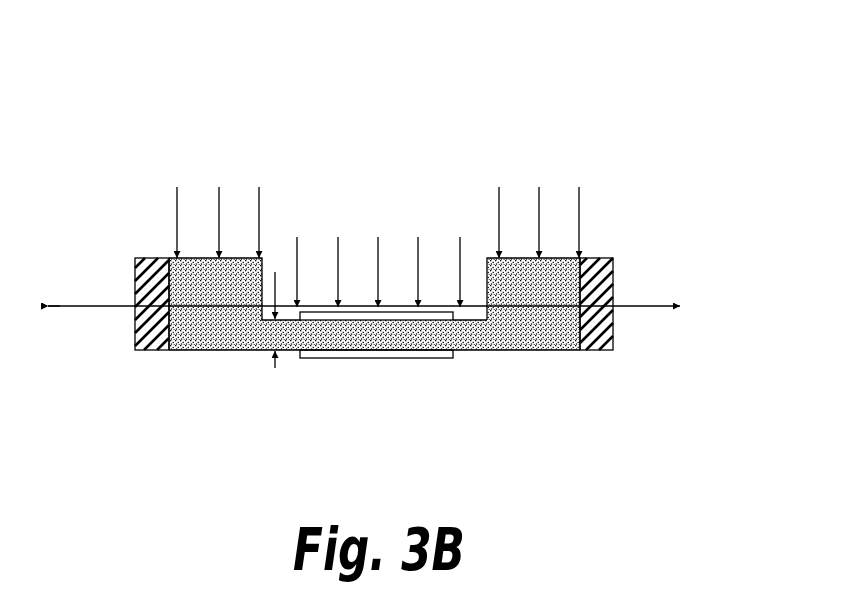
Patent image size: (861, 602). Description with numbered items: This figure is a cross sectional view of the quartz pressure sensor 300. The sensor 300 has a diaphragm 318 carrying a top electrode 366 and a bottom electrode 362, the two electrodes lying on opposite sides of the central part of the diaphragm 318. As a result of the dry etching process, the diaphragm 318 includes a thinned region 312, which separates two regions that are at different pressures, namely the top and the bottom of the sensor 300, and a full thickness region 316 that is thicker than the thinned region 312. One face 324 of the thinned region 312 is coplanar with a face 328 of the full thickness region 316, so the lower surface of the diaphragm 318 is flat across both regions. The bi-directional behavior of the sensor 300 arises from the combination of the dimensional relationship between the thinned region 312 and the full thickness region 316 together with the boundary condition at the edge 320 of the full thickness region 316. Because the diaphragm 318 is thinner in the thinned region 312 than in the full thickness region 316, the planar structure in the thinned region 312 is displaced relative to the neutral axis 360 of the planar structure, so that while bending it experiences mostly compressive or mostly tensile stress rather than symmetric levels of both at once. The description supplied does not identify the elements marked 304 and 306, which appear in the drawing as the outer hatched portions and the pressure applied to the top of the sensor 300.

The sensor 300 is at (538, 142).
The frame / anchor 304 is at (133, 270).
The applied pressure 306 is at (353, 195).
The thinned region 312 is at (290, 340).
The full thickness region 316 is at (197, 332).
The diaphragm 318 is at (367, 343).
The edge of the full thickness region 320 is at (168, 351).
The face of the thinned region 324 is at (488, 352).
The face of the full thickness region 328 is at (233, 352).
The neutral axis 360 is at (643, 306).
The bottom electrode 362 is at (418, 357).
The top electrode 366 is at (455, 314).